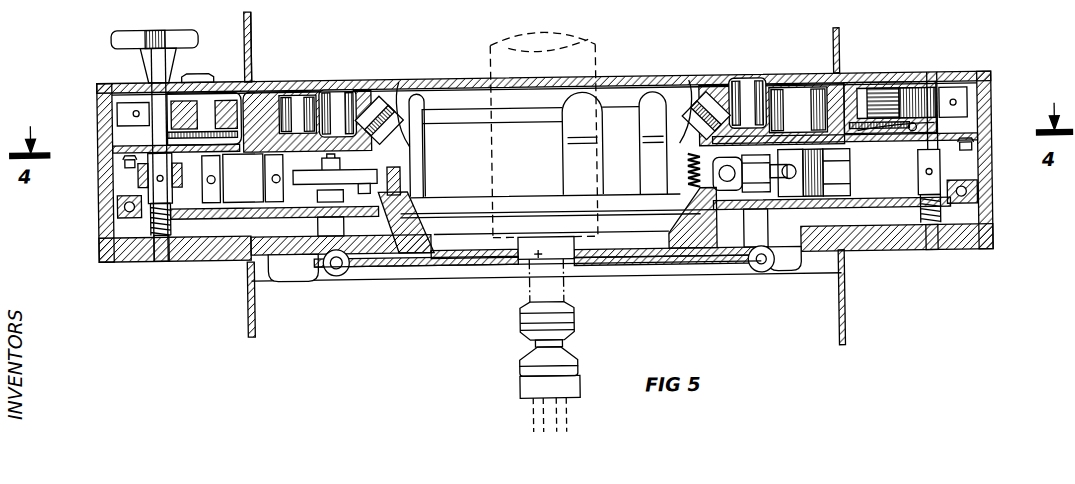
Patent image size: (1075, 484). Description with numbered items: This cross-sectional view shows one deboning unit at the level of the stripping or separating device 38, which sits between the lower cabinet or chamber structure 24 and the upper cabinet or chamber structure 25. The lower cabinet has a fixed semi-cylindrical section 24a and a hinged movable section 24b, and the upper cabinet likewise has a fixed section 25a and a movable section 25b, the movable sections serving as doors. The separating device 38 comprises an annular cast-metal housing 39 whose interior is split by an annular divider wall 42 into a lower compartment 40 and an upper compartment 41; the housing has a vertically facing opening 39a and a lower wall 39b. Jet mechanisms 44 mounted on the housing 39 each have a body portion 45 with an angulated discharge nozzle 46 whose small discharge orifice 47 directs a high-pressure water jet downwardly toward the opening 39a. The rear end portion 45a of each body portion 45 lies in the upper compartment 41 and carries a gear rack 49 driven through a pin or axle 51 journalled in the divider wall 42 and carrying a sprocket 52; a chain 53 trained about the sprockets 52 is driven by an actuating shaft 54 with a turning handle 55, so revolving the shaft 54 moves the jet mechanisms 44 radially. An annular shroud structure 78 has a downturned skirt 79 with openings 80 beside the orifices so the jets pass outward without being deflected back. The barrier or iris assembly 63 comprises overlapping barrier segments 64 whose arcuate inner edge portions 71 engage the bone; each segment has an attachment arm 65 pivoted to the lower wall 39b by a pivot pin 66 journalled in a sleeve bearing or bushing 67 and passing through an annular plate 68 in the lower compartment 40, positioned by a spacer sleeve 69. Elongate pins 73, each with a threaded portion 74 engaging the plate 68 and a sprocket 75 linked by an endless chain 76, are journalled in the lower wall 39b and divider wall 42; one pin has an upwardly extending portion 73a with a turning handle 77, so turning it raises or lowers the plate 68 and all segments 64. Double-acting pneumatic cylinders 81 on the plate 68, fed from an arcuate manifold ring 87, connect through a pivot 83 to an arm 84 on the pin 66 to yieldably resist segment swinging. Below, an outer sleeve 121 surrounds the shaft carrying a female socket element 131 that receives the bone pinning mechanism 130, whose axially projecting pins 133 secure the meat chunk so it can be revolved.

The lower cabinet or chamber structure 24 is at (260, 324).
The fixed semi-cylindrical section 24a is at (248, 320).
The movable semi-cylindrical section 24b is at (845, 314).
The upper cabinet or chamber structure 25 is at (262, 22).
The fixed semi-cylindrical section 25a is at (256, 34).
The movable semi-cylindrical section 25b is at (843, 36).
The stripping or separating device 38 is at (1018, 58).
The housing 39 is at (985, 190).
The opening 39a is at (425, 228).
The lower wall 39b is at (682, 252).
The lower compartment 40 is at (905, 216).
The upper compartment 41 is at (117, 131).
The annular divider wall 42 is at (962, 140).
The jet mechanisms 44 is at (363, 78).
The body portion 45 is at (308, 92).
The rear end portion 45a is at (118, 107).
The discharge nozzle 46 is at (385, 128).
The discharge orifice 47 is at (372, 144).
The gear rack 49 is at (930, 92).
The pin or axle 51 is at (900, 92).
The sprocket 52 is at (213, 126).
The chain 53 is at (917, 130).
The actuating shaft 54 is at (186, 126).
The turning handle 55 is at (193, 69).
The barrier or iris assembly 63 is at (433, 314).
The barrier segments 64 is at (432, 265).
The attachment arm 65 is at (322, 272).
The pivot pin 66 is at (334, 273).
The sleeve bearing or bushing 67 is at (350, 233).
The annular member or plate 68 is at (226, 240).
The spacer sleeve 69 is at (317, 194).
The inner edge portion 71 is at (535, 260).
The elongate pins 73 is at (163, 256).
The upwardly extending portion 73a is at (151, 92).
The threaded portion 74 is at (152, 218).
The sprocket 75 is at (147, 176).
The endless chain 76 is at (125, 158).
The turning handle 77 is at (137, 25).
The shroud structure 78 is at (662, 72).
The annular skirt or flange 79 is at (443, 107).
The openings 80 is at (418, 93).
The pneumatic cylinders 81 is at (855, 190).
The pivot 83 is at (362, 183).
The arm 84 is at (345, 199).
The manifold ring 87 is at (117, 203).
The outer sleeve 121 is at (588, 46).
The bone pinning mechanism 130 is at (508, 383).
The female socket element 131 is at (517, 328).
The pins 133 is at (567, 406).